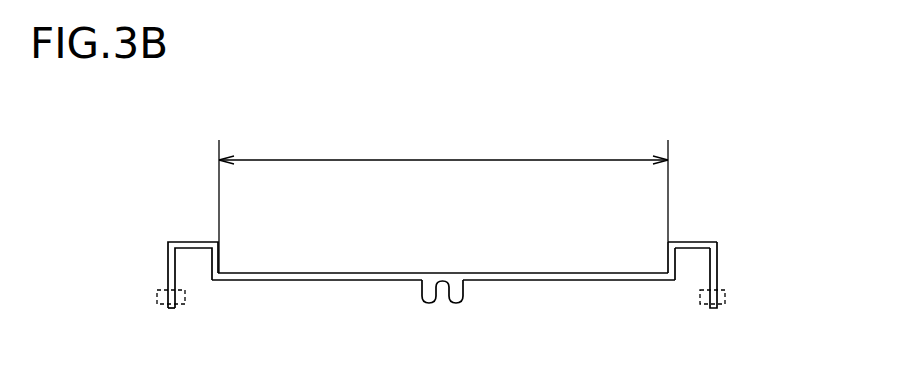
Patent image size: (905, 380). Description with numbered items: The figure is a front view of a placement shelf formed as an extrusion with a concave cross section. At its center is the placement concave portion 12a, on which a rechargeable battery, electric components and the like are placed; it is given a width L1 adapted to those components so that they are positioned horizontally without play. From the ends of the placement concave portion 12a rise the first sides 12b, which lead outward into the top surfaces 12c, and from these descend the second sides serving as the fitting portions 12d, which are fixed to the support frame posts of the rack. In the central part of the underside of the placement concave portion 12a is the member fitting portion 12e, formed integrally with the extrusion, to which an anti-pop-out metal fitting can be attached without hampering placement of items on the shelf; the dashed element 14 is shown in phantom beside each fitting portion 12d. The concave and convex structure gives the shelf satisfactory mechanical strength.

The placement concave portion 12a is at (363, 273).
The first sides 12b is at (667, 263).
The top surfaces 12c is at (692, 241).
The fitting portions 12d is at (718, 262).
The member fitting portion 12e is at (463, 294).
The engaged member (phantom) 14 is at (725, 296).
The width L1 is at (443, 204).